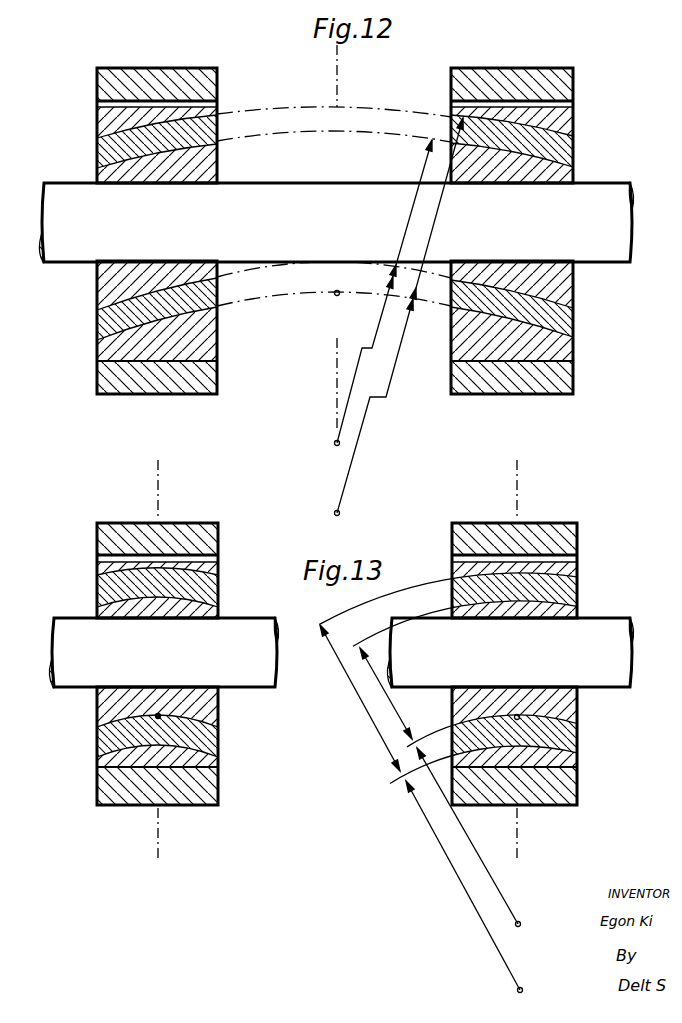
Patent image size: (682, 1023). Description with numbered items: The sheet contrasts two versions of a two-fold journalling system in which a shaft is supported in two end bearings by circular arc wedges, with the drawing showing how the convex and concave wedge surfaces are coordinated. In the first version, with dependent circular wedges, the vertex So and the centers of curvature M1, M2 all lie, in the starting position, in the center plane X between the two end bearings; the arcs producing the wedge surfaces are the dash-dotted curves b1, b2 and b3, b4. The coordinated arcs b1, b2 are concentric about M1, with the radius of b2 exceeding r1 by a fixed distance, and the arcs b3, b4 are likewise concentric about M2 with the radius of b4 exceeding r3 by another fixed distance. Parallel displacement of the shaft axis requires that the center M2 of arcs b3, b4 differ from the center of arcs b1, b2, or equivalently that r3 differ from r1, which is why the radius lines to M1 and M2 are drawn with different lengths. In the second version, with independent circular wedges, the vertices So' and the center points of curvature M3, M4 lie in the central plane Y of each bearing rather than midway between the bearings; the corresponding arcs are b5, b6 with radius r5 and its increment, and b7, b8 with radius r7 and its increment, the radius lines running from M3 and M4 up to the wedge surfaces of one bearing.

In FIG. 12, the arc b1 is at (276, 270).
In FIG. 12, the arc b2 is at (291, 134).
In FIG. 12, the arc b3 is at (248, 301).
In FIG. 12, the arc b4 is at (301, 110).
In FIG. 13, the arc b5 is at (560, 722).
In FIG. 13, the arc b6 is at (577, 607).
In FIG. 13, the arc b7 is at (577, 755).
In FIG. 13, the arc b8 is at (577, 577).
In FIG. 12, the vertex So is at (328, 308).
In FIG. 13, the vertex So' is at (390, 726).
In FIG. 12, the center of curvature M1 is at (320, 449).
In FIG. 12, the center of curvature M2 is at (320, 519).
In FIG. 13, the center point of curvature M3 is at (533, 924).
In FIG. 13, the center point of curvature M4 is at (535, 990).
In FIG. 12, the radius of curvature r1 is at (366, 354).
In FIG. 12, the radius of curvature r3 is at (376, 400).
In FIG. 13, the radius of curvature r5 is at (467, 836).
In FIG. 13, the radius of curvature r7 is at (463, 885).
In FIG. 12, the center plane X is at (345, 238).
In FIG. 13, the central plane Y is at (346, 660).